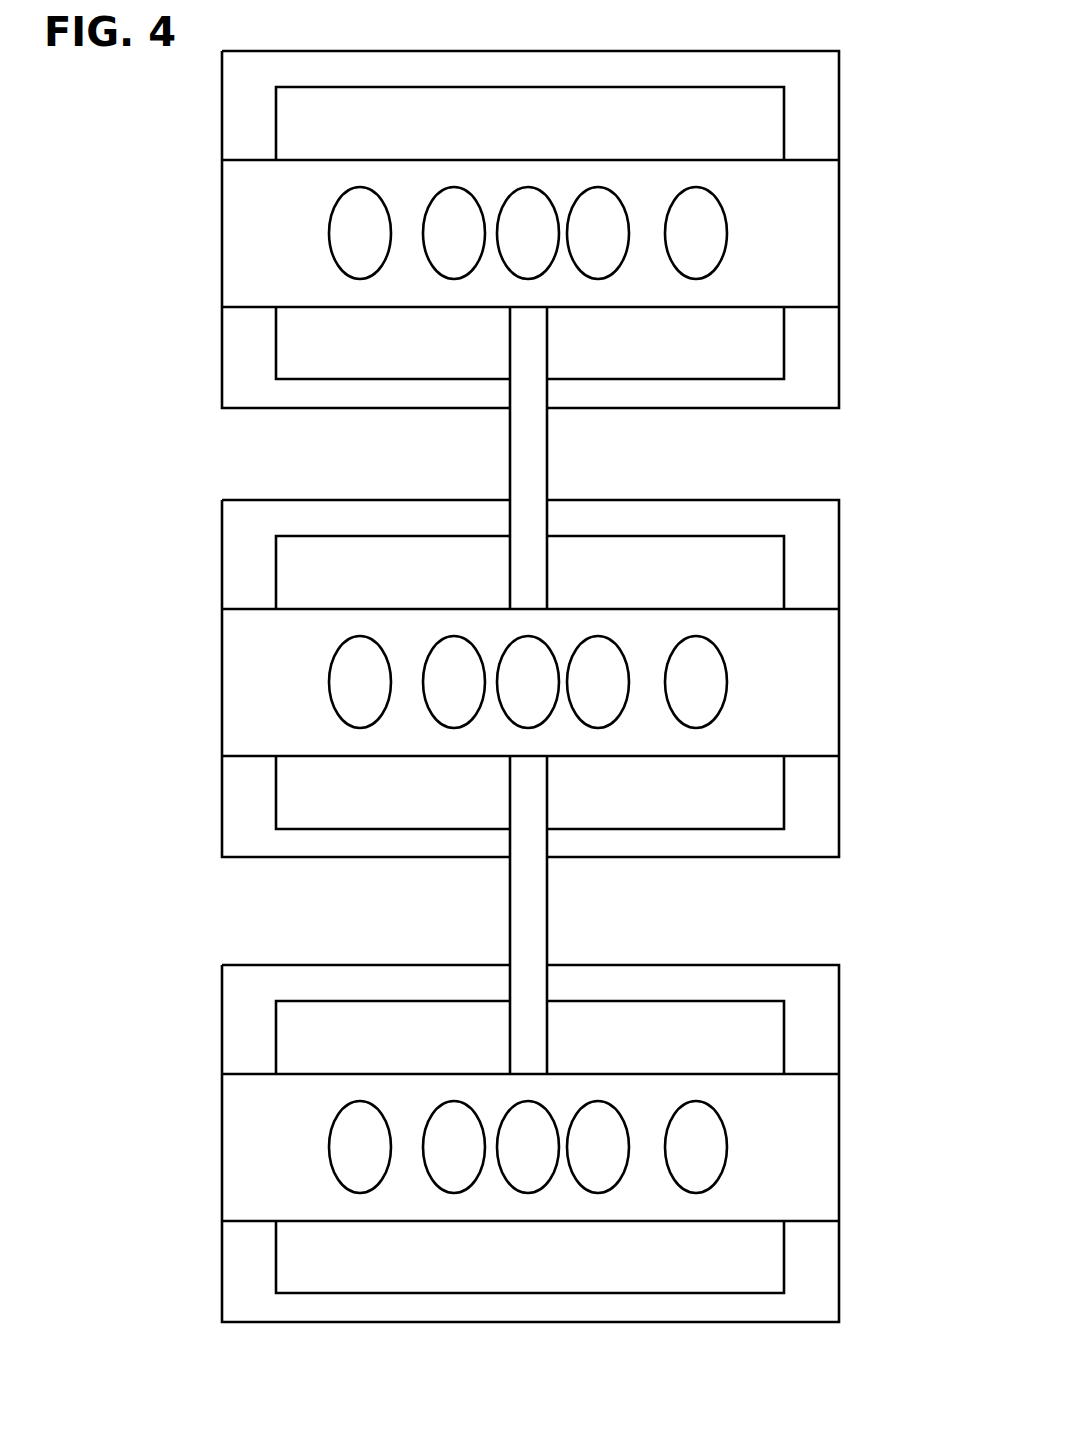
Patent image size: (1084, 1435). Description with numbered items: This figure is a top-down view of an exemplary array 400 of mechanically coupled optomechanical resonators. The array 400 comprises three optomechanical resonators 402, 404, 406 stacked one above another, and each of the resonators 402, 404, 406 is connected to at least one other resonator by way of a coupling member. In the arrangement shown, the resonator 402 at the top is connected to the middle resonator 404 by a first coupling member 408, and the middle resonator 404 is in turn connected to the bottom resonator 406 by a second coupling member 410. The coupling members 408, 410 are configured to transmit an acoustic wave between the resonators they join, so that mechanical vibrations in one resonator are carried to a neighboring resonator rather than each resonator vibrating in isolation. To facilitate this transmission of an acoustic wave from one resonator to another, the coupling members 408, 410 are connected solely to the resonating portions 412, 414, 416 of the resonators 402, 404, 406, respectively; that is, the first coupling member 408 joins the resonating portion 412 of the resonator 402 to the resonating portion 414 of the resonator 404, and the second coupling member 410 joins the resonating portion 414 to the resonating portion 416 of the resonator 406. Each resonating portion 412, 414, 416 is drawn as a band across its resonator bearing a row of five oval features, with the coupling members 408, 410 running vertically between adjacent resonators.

The array 400 is at (884, 33).
The optomechanical resonator 402 is at (839, 87).
The optomechanical resonator 404 is at (839, 535).
The optomechanical resonator 406 is at (839, 1000).
The first coupling member 408 is at (547, 452).
The second coupling member 410 is at (547, 918).
The resonating portion 412 is at (657, 160).
The resonating portion 414 is at (657, 609).
The resonating portion 416 is at (657, 1074).